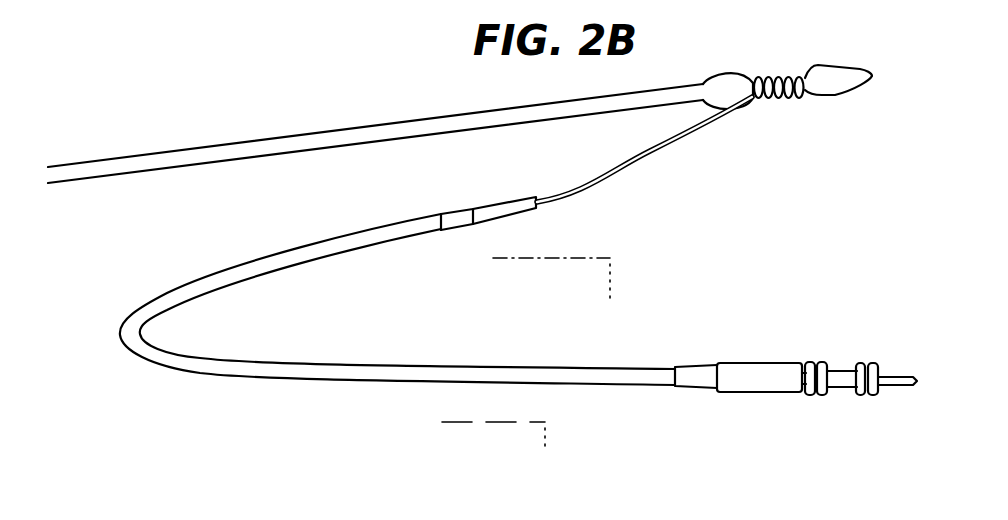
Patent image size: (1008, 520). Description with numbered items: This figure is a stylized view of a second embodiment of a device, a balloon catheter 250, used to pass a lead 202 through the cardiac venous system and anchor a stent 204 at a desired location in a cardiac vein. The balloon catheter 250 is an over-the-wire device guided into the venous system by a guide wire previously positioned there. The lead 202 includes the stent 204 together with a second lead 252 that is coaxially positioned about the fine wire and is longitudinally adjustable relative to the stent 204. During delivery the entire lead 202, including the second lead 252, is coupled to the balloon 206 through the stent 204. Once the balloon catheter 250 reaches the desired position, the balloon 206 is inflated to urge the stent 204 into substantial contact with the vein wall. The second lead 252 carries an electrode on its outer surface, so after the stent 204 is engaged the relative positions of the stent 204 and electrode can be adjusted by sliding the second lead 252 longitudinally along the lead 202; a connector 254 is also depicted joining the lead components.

The lead 202 is at (518, 288).
The stent 204 is at (790, 74).
The balloon 206 is at (855, 90).
The balloon catheter 250 is at (237, 142).
The second lead 252 is at (397, 385).
The connector 254 is at (453, 230).